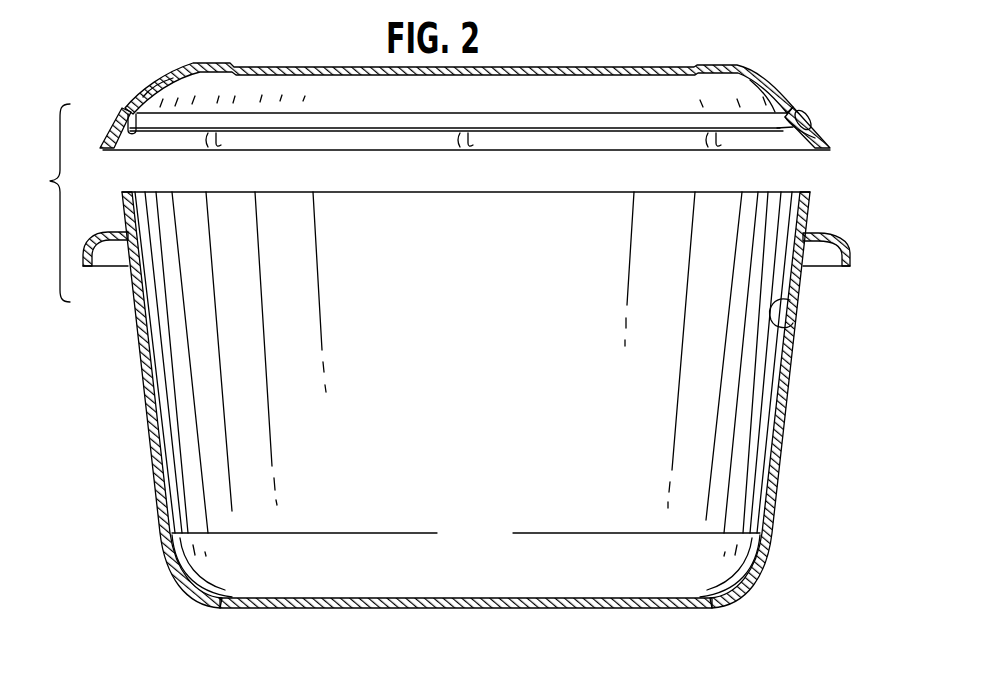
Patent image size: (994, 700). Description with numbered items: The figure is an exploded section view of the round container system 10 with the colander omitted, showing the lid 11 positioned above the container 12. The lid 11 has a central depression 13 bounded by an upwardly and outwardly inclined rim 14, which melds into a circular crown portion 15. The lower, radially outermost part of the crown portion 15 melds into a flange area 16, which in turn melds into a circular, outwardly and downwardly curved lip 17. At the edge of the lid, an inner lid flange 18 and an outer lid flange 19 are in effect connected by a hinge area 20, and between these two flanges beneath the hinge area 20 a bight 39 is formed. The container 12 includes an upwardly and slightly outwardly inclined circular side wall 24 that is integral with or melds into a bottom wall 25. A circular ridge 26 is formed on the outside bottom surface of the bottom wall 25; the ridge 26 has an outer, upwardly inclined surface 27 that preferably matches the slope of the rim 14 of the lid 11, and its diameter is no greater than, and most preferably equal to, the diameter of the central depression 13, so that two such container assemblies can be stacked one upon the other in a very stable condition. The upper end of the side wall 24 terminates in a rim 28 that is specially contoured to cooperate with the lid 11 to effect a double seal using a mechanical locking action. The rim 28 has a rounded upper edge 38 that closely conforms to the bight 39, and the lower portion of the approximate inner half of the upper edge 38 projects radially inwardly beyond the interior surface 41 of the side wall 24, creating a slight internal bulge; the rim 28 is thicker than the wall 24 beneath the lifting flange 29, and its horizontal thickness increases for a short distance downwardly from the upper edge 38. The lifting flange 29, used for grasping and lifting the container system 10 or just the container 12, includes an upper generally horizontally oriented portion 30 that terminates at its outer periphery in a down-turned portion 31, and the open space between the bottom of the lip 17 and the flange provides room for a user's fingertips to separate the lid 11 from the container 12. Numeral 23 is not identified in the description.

The container system 10 is at (43, 203).
The lid 11 is at (747, 58).
The container 12 is at (141, 399).
The central depression 13 is at (513, 70).
The rim 14 is at (693, 69).
The crown portion 15 is at (775, 110).
The flange area 16 is at (121, 108).
The lip 17 is at (820, 133).
The inner lid flange 18 is at (793, 127).
The outer lid flange 19 is at (817, 118).
The hinge area 20 is at (804, 112).
The knob 23 is at (358, 7).
The side wall 24 is at (785, 404).
The bottom wall 25 is at (517, 608).
The ridge 26 is at (257, 610).
The outer upwardly inclined surface 27 is at (240, 610).
The rim 28 is at (811, 187).
The lifting flange 29 is at (852, 248).
The upper horizontally oriented portion 30 is at (819, 232).
The down-turned portion 31 is at (110, 268).
The upper edge 38 is at (125, 192).
The bight 39 is at (132, 150).
The interior surface 41 is at (793, 323).